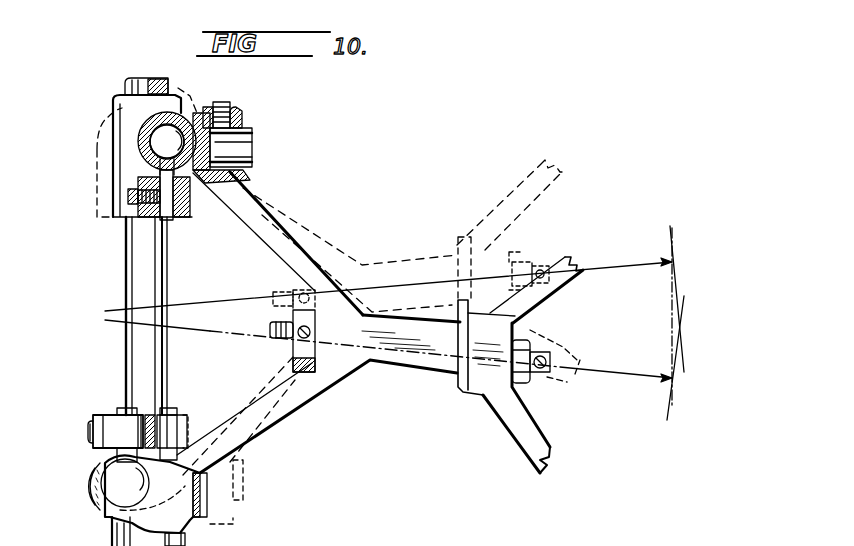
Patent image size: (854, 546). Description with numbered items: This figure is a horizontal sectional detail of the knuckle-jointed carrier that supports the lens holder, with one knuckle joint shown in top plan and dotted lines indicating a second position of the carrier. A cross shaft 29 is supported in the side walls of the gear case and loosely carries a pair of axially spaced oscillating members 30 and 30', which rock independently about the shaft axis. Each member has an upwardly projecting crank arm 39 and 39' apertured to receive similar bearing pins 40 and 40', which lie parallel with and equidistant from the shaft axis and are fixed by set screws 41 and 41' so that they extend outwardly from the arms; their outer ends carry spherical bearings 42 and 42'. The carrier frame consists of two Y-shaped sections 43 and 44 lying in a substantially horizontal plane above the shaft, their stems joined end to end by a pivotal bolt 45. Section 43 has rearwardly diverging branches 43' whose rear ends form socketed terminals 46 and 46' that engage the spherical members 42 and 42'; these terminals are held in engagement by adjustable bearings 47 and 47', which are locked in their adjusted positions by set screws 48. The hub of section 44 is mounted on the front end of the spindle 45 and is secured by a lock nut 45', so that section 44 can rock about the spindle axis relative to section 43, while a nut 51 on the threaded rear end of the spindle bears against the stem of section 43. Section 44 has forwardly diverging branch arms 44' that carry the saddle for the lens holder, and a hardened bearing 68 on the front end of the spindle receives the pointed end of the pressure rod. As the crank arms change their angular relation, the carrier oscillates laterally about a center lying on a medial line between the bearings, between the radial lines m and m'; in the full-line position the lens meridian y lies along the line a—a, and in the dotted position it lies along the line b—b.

The cross shaft 29 is at (133, 291).
The oscillating member 30 is at (168, 437).
The oscillating member 30' is at (136, 152).
The crank arm 39 is at (103, 430).
The crank arm 39' is at (179, 200).
The bearing pin 40 is at (135, 401).
The bearing pin 40' is at (181, 208).
The set screw 41 is at (79, 434).
The set screw 41' is at (115, 199).
The spherical bearing 42 is at (123, 484).
The spherical bearing 42' is at (126, 150).
The Y-shaped carrier section 43 is at (318, 330).
The branches 43' is at (273, 323).
The Y-shaped carrier section 44 is at (520, 316).
The branch arms 44' is at (562, 370).
The pivotal bolt 45 is at (407, 347).
The lock nut 45' is at (526, 371).
The socketed terminal 46 is at (136, 500).
The socketed terminal 46' is at (138, 124).
The adjustable bearing 47 is at (218, 492).
The adjustable bearing 47' is at (238, 148).
The set screw 48 is at (224, 104).
The nut 51 is at (293, 357).
The hardened bearing 68 is at (549, 353).
The radial line m is at (388, 361).
The radial line m' is at (388, 275).
The line a— a is at (674, 360).
The line b— b is at (677, 292).
The meridian y is at (668, 325).